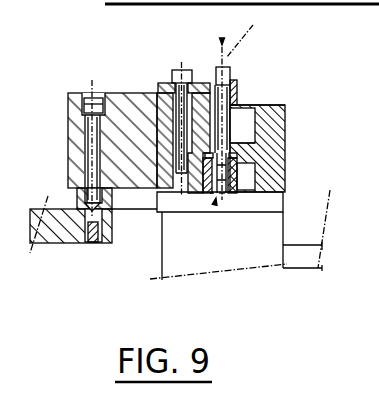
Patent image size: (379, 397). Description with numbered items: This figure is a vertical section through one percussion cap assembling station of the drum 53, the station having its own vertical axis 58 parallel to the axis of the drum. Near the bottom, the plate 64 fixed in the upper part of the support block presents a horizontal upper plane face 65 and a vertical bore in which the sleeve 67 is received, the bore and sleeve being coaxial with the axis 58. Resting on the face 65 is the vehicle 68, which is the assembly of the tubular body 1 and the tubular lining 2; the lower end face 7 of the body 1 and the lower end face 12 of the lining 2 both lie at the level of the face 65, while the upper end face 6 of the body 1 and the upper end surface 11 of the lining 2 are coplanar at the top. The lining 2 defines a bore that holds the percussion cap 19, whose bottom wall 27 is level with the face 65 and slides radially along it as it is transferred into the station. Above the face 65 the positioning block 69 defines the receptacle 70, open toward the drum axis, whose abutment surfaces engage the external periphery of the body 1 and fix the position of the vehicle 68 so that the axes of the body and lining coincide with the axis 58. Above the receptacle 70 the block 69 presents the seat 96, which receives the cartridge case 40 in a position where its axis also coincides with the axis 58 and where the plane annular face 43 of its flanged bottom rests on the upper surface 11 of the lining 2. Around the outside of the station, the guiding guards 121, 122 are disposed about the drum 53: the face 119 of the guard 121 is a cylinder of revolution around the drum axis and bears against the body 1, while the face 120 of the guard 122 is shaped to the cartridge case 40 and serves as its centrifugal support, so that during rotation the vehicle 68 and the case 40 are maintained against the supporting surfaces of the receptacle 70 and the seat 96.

The body 1 is at (242, 175).
The lining 2 is at (230, 201).
The end face 6 is at (250, 146).
The end face 7 is at (234, 200).
The end face 11 is at (251, 111).
The end face 12 is at (216, 200).
The percussion cap 19 is at (222, 202).
The bottom wall 27 is at (218, 283).
The cartridge case 40 is at (236, 63).
The plane annular face 43 is at (247, 161).
The drum 53 is at (262, 280).
The vertical axis 58 is at (252, 32).
The plate 64 is at (158, 200).
The upper plane face 65 is at (143, 215).
The sleeve 67 is at (222, 43).
The vehicle 68 is at (176, 200).
The positioning block 69 is at (286, 111).
The receptacle 70 is at (251, 166).
The seat 96 is at (245, 107).
The face 119 is at (212, 200).
The face 120 is at (214, 74).
The guiding guard 121 is at (121, 112).
The guiding guard 122 is at (165, 113).